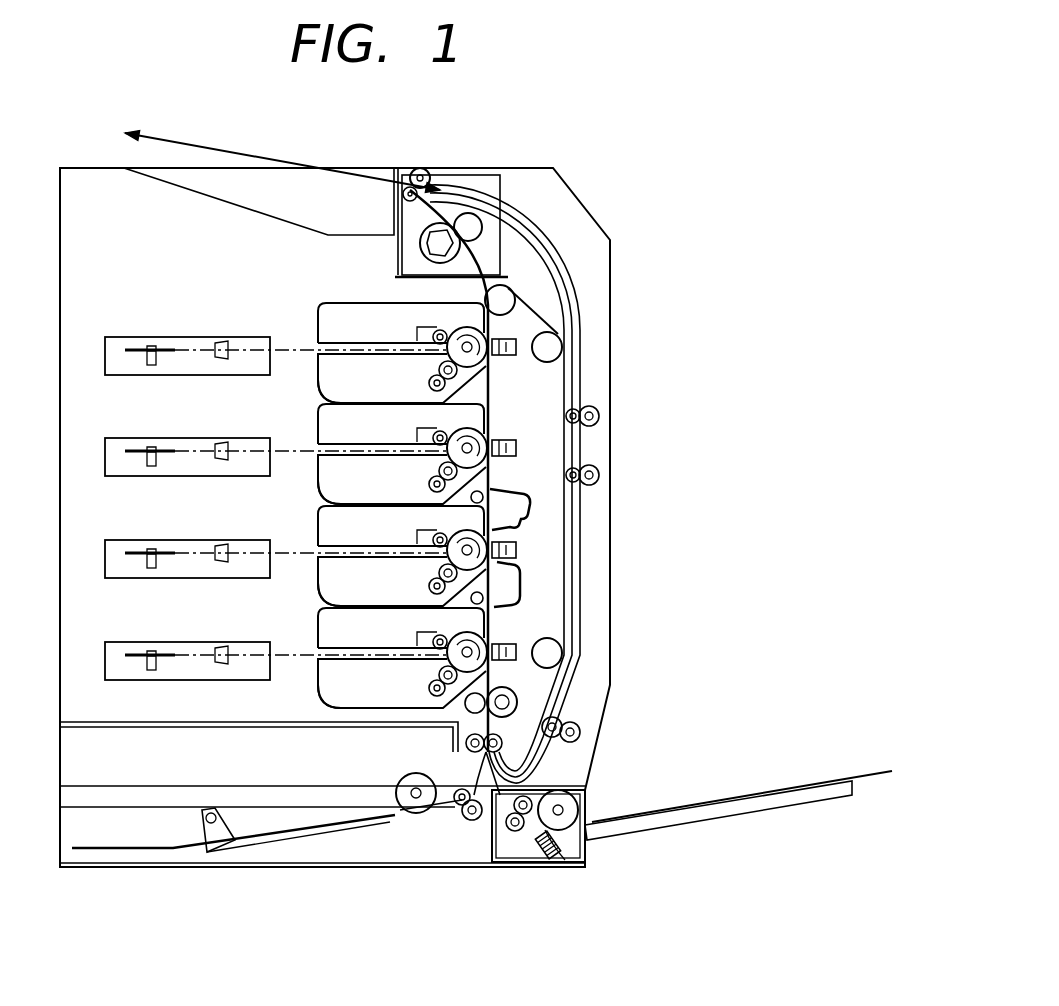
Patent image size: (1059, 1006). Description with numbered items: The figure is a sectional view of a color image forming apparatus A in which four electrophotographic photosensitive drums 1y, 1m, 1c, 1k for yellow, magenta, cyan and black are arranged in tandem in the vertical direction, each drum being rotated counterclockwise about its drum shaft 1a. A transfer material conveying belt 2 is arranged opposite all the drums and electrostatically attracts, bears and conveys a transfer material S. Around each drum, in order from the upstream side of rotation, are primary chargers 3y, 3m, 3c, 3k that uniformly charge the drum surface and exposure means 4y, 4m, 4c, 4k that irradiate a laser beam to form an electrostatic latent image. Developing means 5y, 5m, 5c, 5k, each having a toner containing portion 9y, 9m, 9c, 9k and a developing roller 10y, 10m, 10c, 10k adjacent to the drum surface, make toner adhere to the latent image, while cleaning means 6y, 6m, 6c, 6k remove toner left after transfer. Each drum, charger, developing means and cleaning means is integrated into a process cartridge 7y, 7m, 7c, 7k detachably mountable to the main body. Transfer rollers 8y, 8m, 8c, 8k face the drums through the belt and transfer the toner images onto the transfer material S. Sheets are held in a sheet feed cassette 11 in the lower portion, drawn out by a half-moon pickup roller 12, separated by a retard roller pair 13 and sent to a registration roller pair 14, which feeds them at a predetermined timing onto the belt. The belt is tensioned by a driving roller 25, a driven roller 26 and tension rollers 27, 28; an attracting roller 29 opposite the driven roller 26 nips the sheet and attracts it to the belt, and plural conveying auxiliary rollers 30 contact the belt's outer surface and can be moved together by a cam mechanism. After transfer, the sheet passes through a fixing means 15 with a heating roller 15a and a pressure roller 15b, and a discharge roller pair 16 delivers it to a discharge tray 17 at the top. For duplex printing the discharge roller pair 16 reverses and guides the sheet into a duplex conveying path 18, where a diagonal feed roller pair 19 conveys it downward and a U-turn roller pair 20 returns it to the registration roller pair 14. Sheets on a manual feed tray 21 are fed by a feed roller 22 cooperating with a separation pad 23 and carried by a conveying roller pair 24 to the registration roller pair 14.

The color image forming apparatus A is at (612, 188).
The transfer material S is at (837, 780).
The drum shaft 1a is at (497, 362).
The photosensitive drum 1k is at (407, 362).
The photosensitive drum 1c is at (402, 479).
The photosensitive drum 1m is at (402, 581).
The photosensitive drum 1y is at (402, 683).
The transfer material conveying belt 2 is at (563, 383).
The primary charger 3k is at (410, 338).
The primary charger 3c is at (401, 424).
The primary charger 3m is at (401, 526).
The primary charger 3y is at (401, 628).
The exposure means 4k is at (122, 375).
The exposure means 4c is at (169, 470).
The exposure means 4m is at (169, 572).
The exposure means 4y is at (169, 674).
The developing means 5k is at (338, 382).
The developing means 5c is at (312, 496).
The developing means 5m is at (312, 598).
The developing means 5y is at (312, 700).
The cleaning means 6k is at (433, 328).
The cleaning means 6c is at (412, 425).
The cleaning means 6m is at (412, 527).
The cleaning means 6y is at (412, 629).
The process cartridge 7k is at (319, 337).
The process cartridge 7c is at (286, 427).
The process cartridge 7m is at (286, 529).
The process cartridge 7y is at (286, 631).
The transfer roller 8k is at (497, 335).
The transfer roller 8c is at (525, 458).
The transfer roller 8m is at (527, 562).
The transfer roller 8y is at (573, 683).
The toner containing portion 9k is at (318, 358).
The toner containing portion 9c is at (286, 477).
The toner containing portion 9m is at (286, 579).
The toner containing portion 9y is at (286, 681).
The developing roller 10k is at (430, 376).
The developing roller 10c is at (416, 479).
The developing roller 10m is at (416, 581).
The developing roller 10y is at (416, 683).
The sheet feed cassette 11 is at (266, 853).
The pickup roller 12 is at (413, 813).
The retard roller pair 13 is at (476, 822).
The registration roller pair 14 is at (552, 770).
The fixing means 15 is at (468, 180).
The heating roller 15a is at (460, 250).
The pressure roller 15b is at (478, 216).
The discharge roller pair 16 is at (421, 167).
The discharge tray 17 is at (222, 197).
The duplex conveying path 18 is at (553, 258).
The diagonal feed roller pair 19 is at (600, 474).
The U-turn roller pair 20 is at (582, 732).
The manual feed tray 21 is at (713, 822).
The feed roller 22 is at (583, 812).
The separation pad 23 is at (565, 840).
The conveying roller pair 24 is at (522, 832).
The driving roller 25 is at (515, 296).
The driven roller 26 is at (500, 748).
The tension roller 27 is at (560, 352).
The tension roller 28 is at (562, 653).
The attracting roller 29 is at (462, 708).
The conveying auxiliary rollers 30 is at (485, 494).